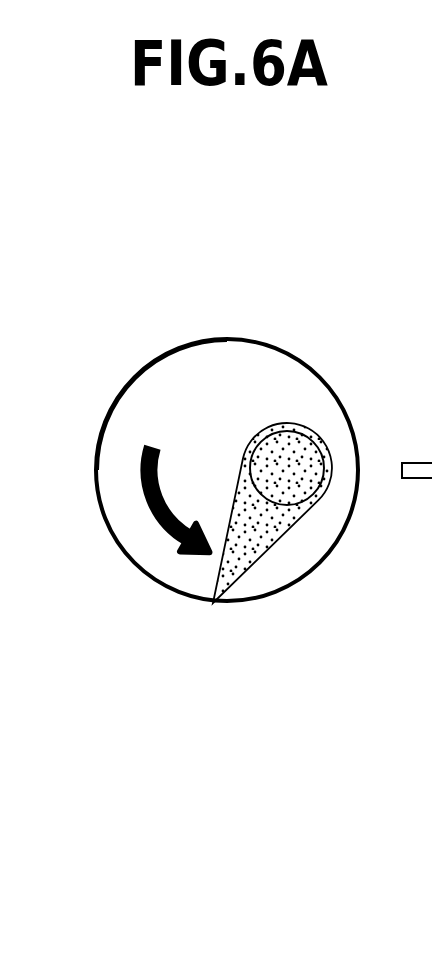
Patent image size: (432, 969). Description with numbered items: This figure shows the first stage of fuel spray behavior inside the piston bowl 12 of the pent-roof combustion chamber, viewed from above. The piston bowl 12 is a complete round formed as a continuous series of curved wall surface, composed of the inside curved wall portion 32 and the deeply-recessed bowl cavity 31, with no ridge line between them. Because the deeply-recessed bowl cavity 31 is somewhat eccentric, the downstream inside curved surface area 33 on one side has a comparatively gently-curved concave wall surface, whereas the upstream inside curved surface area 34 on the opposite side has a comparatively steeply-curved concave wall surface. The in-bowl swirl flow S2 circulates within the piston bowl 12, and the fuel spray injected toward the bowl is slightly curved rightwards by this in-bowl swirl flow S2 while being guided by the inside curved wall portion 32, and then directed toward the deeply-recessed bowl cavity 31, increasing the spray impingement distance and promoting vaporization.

The piston bowl 12 is at (266, 343).
The deeply-recessed bowl cavity 31 is at (292, 432).
The inside curved wall portion 32 is at (190, 363).
The downstream inside curved surface area 33 is at (125, 455).
The upstream inside curved surface area 34 is at (348, 468).
The in-bowl swirl flow S2 is at (160, 533).